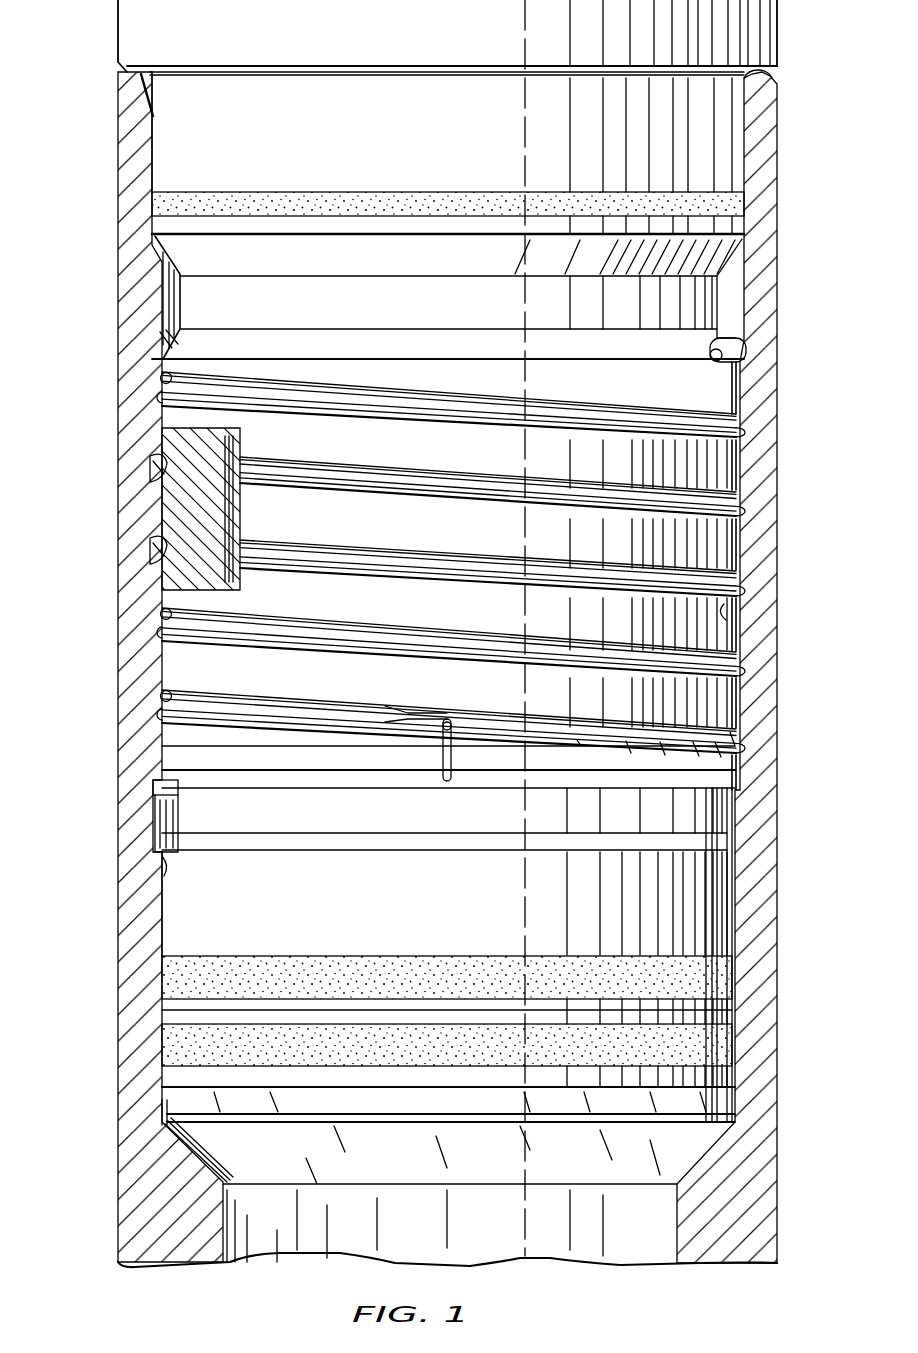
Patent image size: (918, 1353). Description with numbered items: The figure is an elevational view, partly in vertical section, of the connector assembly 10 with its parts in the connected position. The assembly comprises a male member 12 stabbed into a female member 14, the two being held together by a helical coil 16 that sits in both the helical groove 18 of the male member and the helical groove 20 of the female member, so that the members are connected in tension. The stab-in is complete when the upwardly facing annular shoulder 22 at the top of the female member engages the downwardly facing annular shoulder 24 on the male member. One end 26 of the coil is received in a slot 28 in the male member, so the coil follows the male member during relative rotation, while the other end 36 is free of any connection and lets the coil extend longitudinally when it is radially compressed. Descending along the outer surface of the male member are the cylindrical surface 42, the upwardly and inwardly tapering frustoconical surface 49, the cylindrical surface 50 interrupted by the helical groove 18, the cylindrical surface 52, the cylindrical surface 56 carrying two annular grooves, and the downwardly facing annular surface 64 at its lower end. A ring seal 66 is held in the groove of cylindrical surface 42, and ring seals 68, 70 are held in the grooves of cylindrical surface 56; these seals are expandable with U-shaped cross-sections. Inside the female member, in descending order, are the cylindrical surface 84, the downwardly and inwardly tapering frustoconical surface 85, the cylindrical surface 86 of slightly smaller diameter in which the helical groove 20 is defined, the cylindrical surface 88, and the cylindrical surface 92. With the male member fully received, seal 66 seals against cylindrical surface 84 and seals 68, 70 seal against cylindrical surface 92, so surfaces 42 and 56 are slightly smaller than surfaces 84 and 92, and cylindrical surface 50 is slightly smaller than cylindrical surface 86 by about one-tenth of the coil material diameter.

The connector assembly 10 is at (800, 213).
The male member 12 is at (780, 41).
The female member 14 is at (780, 268).
The helical coil 16 is at (745, 424).
The helical groove 18 is at (746, 584).
The helical groove 20 is at (726, 606).
The upwardly facing annular shoulder 22 is at (777, 62).
The downwardly facing annular shoulder 24 is at (775, 86).
The end 26 is at (426, 723).
The slot 28 is at (451, 750).
The other end 36 is at (707, 338).
The cylindrical surface 42 is at (155, 154).
The upwardly and inwardly tapering frustoconical surface 49 is at (156, 302).
The cylindrical surface 50 is at (162, 362).
The cylindrical surface 52 is at (721, 820).
The cylindrical surface 56 is at (163, 922).
The downwardly facing annular surface 64 is at (167, 1128).
The ring seal 66 is at (156, 202).
The ring seal 68 is at (163, 971).
The ring seal 70 is at (160, 1049).
The cylindrical surface 84 is at (160, 132).
The downwardly and inwardly tapering frustoconical surface 85 is at (155, 318).
The cylindrical surface 86 is at (163, 436).
The cylindrical surface 88 is at (156, 821).
The cylindrical surface 92 is at (165, 885).